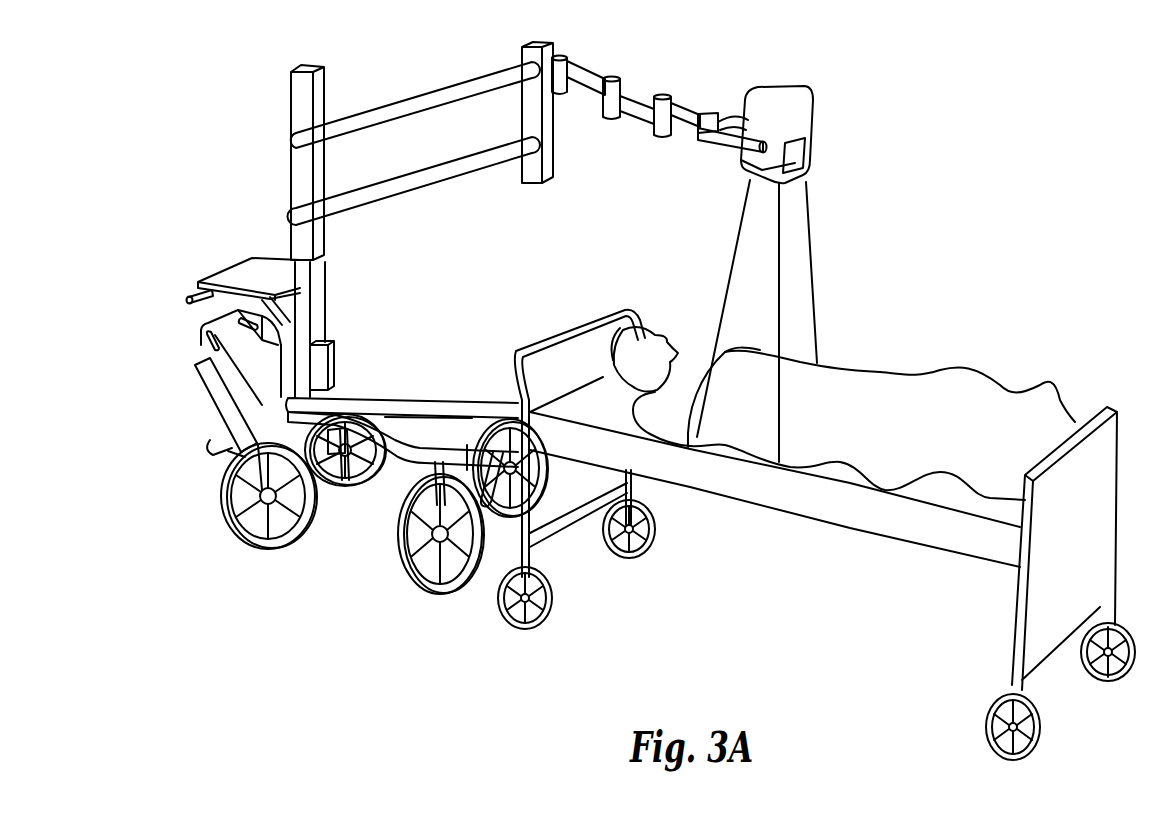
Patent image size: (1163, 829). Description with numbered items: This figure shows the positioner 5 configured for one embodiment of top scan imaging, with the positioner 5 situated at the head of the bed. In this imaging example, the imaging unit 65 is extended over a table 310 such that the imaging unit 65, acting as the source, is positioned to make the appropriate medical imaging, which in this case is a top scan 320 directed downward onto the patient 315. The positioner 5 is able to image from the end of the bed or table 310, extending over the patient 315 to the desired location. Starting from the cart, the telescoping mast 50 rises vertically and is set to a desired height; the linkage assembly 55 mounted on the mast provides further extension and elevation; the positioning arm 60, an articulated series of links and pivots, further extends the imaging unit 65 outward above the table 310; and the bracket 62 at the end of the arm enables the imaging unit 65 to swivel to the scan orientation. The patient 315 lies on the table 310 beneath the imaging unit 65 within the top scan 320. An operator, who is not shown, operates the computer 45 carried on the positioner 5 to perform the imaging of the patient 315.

The positioner 5 is at (229, 75).
The computer 45 is at (243, 272).
The telescoping mast 50 is at (290, 163).
The linkage assembly 55 is at (395, 83).
The positioning arm 60 is at (586, 59).
The bracket 62 is at (715, 137).
The imaging unit 65 is at (817, 176).
The table 310 is at (772, 510).
The patient 315 is at (913, 375).
The top scan 320 is at (812, 280).